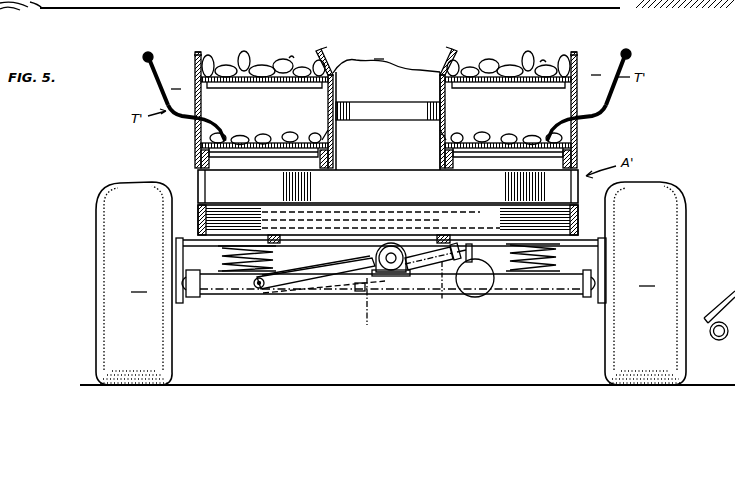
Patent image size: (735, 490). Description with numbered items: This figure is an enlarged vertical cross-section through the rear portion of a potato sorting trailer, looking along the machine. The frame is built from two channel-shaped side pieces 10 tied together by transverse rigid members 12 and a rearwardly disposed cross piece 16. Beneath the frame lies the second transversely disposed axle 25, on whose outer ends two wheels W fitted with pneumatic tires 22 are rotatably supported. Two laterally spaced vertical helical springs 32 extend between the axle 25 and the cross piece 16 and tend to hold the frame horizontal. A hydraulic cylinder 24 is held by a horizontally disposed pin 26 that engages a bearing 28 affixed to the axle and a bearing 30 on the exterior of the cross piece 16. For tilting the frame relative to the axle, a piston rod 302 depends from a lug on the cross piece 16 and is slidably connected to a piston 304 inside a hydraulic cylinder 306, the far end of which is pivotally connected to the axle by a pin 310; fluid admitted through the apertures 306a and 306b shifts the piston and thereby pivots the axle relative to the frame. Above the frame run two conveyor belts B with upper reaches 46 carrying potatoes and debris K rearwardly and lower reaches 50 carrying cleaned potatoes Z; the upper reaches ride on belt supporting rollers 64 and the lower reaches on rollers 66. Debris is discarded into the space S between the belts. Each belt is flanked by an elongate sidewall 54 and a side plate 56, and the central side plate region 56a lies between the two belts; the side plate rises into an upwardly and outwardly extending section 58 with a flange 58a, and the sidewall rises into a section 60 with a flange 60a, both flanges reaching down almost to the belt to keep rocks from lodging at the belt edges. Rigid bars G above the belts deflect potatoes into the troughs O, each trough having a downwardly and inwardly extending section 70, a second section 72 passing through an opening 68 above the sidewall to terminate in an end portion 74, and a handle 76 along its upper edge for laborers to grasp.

The side pieces 10 is at (200, 226).
The transverse rigid members 12 is at (376, 189).
The rearwardly disposed cross piece 16 is at (394, 224).
The pneumatic tires 22 is at (95, 222).
The hydraulic cylinder 24 is at (423, 258).
The second transversely disposed axle 25 is at (365, 315).
The horizontally disposed pin 26 is at (392, 270).
The bearing 28 is at (402, 244).
The bearing 30 is at (373, 248).
The helical springs 32 is at (222, 257).
The upper reaches 46 is at (225, 84).
The lower reaches 50 is at (246, 157).
The sidewalls 54 is at (196, 146).
The side plates 56 is at (386, 115).
The housing band 56a is at (388, 101).
The upwardly and outwardly extending sections 58 is at (322, 50).
The angularly disposed flange 58a is at (336, 62).
The upwardly extending sections 60 is at (199, 55).
The angularly disposed flange 60a is at (193, 58).
The belt supporting rollers 64 is at (292, 84).
The rollers 66 is at (303, 152).
The openings 68 is at (202, 108).
The downwardly and inwardly extending section 70 is at (162, 92).
The second section 72 is at (186, 119).
The end portion 74 is at (232, 152).
The handles 76 is at (149, 52).
The piston rod 302 is at (447, 280).
The piston 304 is at (360, 290).
The hydraulic cylinder 306 is at (328, 287).
The aperture 306a is at (288, 272).
The aperture 306b is at (443, 249).
The pin 310 is at (259, 288).
The potatoes and debris K is at (246, 58).
The bars G is at (289, 62).
The potatoes Z is at (267, 140).
The conveyor belts B is at (323, 140).
The space S is at (373, 56).
The troughs O is at (386, 75).
The wheels W is at (393, 282).